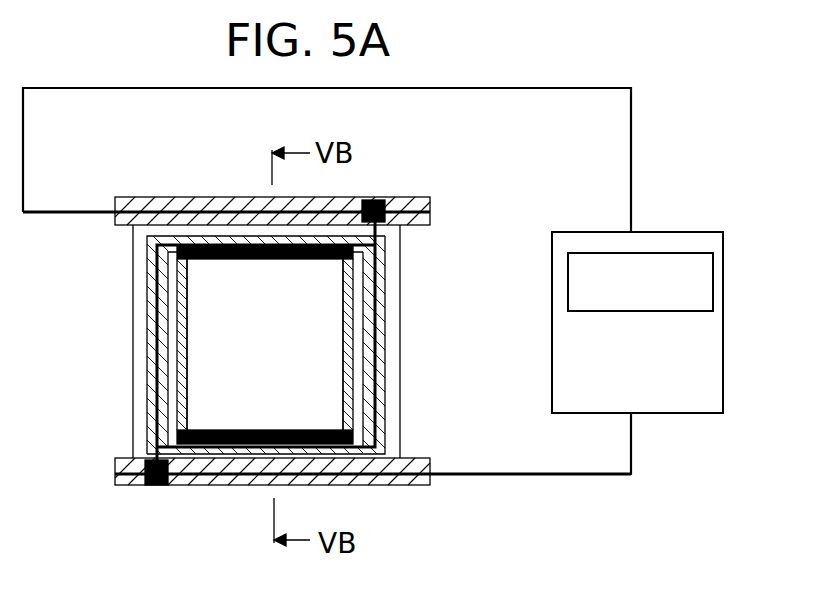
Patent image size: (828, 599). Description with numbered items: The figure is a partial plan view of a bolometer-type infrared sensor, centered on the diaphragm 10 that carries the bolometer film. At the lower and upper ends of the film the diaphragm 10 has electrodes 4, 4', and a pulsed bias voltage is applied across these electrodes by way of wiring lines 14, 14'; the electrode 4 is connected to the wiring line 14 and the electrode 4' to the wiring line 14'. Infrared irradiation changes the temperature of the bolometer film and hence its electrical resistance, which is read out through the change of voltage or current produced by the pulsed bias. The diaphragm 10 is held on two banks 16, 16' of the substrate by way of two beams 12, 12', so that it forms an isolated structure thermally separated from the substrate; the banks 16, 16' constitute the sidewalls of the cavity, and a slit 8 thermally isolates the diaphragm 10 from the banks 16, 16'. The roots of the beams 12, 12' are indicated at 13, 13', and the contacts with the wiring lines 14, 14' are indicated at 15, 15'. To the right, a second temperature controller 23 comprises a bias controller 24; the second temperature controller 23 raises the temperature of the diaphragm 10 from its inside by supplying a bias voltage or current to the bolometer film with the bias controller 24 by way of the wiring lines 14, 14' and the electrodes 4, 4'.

The electrode 4 is at (265, 486).
The electrode 4' is at (265, 196).
The slit 8 is at (356, 282).
The diaphragm 10 is at (218, 316).
The beam 12 is at (323, 345).
The beam 12' is at (212, 345).
The root of beam 13 is at (318, 460).
The root of beam 13' is at (267, 180).
The wiring line 14 is at (324, 334).
The wiring line 14' is at (215, 352).
The contact 15 is at (427, 177).
The contact 15' is at (136, 506).
The bank 16 is at (232, 156).
The bank 16' is at (373, 531).
The second temperature controller 23 is at (680, 414).
The bias controller 24 is at (688, 265).